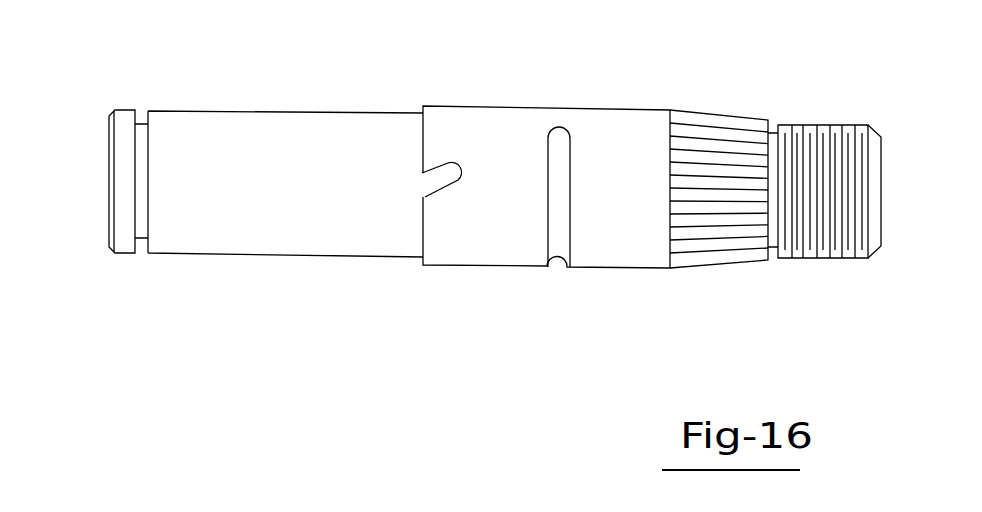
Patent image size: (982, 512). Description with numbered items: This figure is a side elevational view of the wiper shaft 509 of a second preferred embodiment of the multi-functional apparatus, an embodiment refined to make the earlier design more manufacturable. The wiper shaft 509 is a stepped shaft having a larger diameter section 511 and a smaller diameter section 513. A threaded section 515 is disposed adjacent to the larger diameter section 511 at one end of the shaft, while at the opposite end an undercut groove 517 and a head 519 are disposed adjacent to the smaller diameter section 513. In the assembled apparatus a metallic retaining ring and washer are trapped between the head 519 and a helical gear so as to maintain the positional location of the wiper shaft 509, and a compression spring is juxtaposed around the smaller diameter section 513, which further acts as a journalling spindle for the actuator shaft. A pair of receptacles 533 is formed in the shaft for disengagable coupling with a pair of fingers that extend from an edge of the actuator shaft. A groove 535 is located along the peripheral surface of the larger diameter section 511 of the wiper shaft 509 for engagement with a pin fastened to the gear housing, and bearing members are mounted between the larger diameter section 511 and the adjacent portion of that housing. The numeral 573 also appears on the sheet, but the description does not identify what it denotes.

The wiper shaft 509 is at (477, 198).
The larger diameter section 511 is at (564, 187).
The smaller diameter section 513 is at (287, 220).
The threaded section 515 is at (828, 157).
The undercut groove 517 is at (142, 177).
The head 519 is at (123, 212).
The receptacles 533 is at (436, 182).
The groove 535 is at (570, 203).
The reference numeral 573 is at (245, 496).